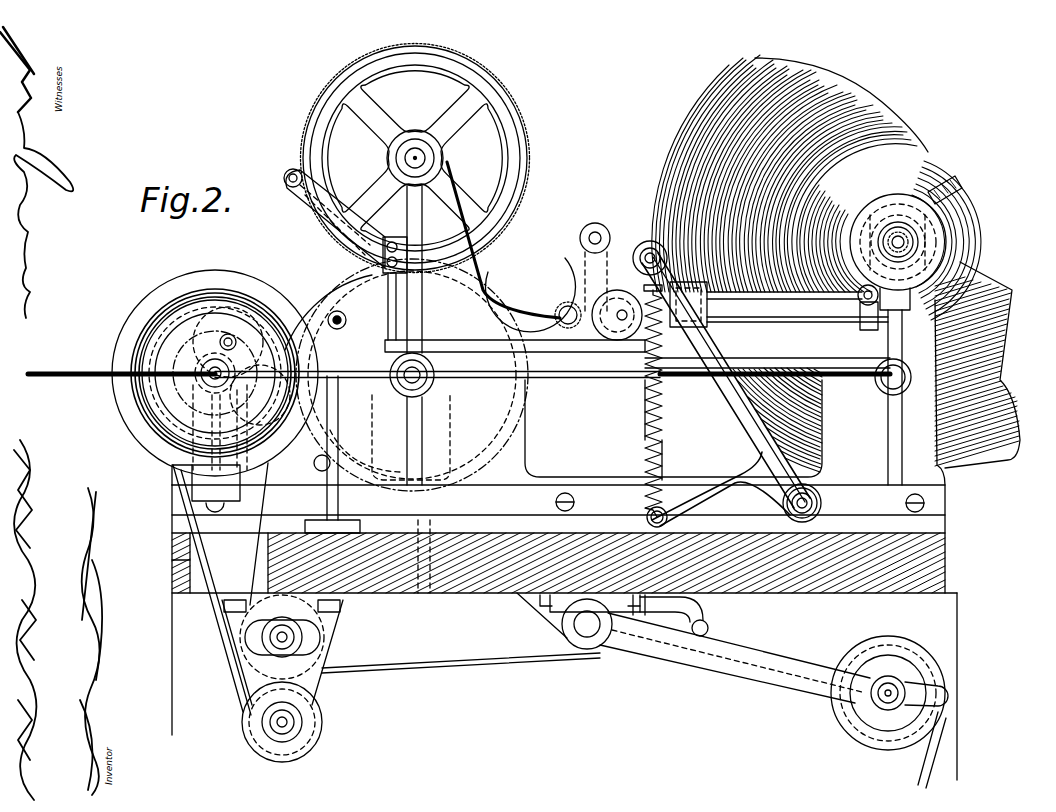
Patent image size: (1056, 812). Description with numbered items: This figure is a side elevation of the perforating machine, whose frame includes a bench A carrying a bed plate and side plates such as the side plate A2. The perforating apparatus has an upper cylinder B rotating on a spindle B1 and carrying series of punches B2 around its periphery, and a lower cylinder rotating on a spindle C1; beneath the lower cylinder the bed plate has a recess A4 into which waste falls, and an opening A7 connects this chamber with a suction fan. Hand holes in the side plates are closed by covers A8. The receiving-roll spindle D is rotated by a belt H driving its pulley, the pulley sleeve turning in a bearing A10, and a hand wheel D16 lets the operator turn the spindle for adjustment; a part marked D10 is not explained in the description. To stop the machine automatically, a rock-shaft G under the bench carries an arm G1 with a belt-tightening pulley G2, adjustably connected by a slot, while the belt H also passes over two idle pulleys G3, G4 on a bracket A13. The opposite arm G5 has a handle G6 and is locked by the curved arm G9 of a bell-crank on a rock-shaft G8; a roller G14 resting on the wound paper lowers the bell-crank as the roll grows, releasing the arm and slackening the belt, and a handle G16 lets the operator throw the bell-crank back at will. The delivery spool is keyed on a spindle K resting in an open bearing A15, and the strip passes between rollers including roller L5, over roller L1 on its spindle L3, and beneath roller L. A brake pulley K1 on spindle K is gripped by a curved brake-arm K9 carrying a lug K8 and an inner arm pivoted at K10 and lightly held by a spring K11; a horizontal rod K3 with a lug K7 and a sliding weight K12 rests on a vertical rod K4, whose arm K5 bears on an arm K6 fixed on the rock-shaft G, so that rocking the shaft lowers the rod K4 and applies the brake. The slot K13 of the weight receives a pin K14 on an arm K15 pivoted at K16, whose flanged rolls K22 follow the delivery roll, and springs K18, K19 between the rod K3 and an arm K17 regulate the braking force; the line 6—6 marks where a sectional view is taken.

The section line 6— 6 is at (32, 371).
The upper cylinder B is at (482, 98).
The spindle B1 is at (428, 160).
The punches B2 is at (521, 121).
The spindle C1 is at (426, 360).
The spindle D is at (124, 372).
The pulley hub D10 is at (154, 357).
The hand wheel D16 is at (140, 408).
The rock-shaft G is at (585, 634).
The arm G1 is at (748, 676).
The belt tightening pulley G2 is at (838, 713).
The idle pulley G3 is at (262, 662).
The idle pulley G4 is at (252, 720).
The second arm G5 is at (540, 610).
The handle G6 is at (340, 270).
The rock-shaft G8 is at (320, 470).
The bell-crank arm G9 is at (472, 418).
The roller G14 is at (335, 302).
The handle G16 is at (212, 310).
The belt H is at (461, 672).
The bench A is at (564, 540).
The side plate A2 is at (178, 508).
The recess A4 is at (412, 522).
The opening A7 is at (436, 530).
The covers A8 is at (330, 314).
The bearing A10 is at (170, 552).
The bracket A13 is at (243, 628).
The open bearing A15 is at (915, 256).
The roller L is at (564, 306).
The roller L1 is at (591, 256).
The spindle L3 is at (515, 353).
The roller L5 is at (620, 323).
The spindle K is at (918, 240).
The small pulley K1 is at (903, 206).
The horizontal rod K3 is at (815, 320).
The vertical rod K4 is at (646, 404).
The arm K5 is at (708, 613).
The arm K6 is at (712, 628).
The lug K7 is at (865, 306).
The lug K8 is at (903, 362).
The curved brake-arm K9 is at (958, 250).
The pivot K10 is at (905, 305).
The spring K11 is at (962, 186).
The weight K12 is at (766, 312).
The slot K13 is at (665, 270).
The pin K14 is at (767, 361).
The arm K15 is at (767, 361).
The pivot K16 is at (818, 498).
The arm K17 is at (690, 494).
The spring K18 is at (648, 442).
The spring K19 is at (664, 404).
The flanged roll K22 is at (645, 248).